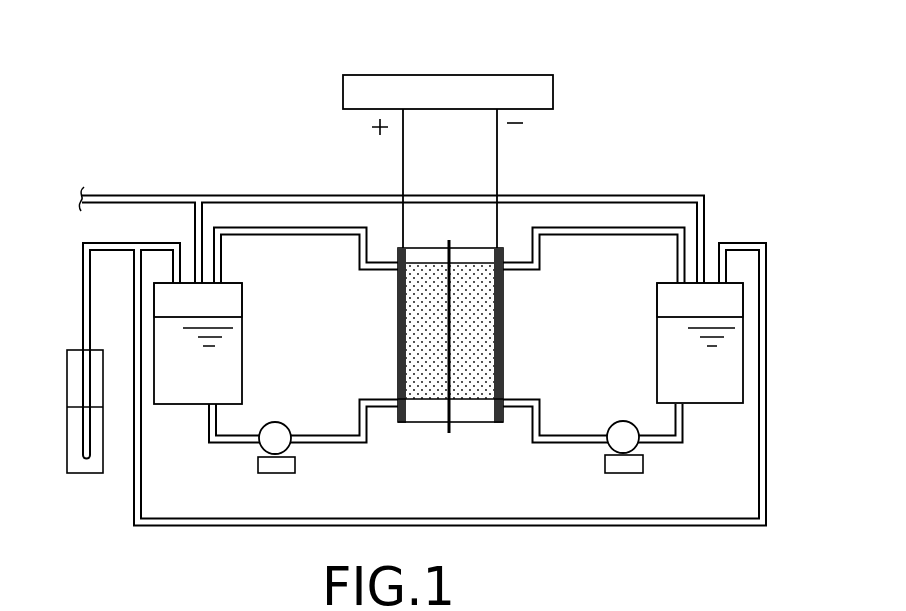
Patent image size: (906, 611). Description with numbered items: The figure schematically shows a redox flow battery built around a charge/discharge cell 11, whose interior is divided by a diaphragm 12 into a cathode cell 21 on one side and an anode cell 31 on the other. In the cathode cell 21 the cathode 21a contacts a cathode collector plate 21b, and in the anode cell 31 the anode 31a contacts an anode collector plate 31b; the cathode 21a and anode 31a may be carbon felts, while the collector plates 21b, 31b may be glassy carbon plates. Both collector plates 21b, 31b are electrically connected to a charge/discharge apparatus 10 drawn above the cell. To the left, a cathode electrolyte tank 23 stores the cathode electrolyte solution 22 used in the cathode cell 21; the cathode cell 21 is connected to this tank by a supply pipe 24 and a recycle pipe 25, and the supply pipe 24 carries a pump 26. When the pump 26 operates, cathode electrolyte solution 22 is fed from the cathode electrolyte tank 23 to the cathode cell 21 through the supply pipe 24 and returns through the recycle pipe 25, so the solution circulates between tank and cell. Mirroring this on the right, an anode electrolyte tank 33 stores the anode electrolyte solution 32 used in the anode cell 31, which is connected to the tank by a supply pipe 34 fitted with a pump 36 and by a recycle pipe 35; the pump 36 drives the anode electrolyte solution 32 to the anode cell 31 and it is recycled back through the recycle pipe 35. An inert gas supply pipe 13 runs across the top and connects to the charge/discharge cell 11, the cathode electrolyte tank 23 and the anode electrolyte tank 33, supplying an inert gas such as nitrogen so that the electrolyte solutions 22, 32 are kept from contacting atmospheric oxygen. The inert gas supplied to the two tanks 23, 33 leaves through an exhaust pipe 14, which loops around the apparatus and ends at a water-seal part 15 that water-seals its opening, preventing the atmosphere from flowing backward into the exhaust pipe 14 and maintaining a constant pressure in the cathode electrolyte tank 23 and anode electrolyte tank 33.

The charge/discharge apparatus 10 is at (553, 91).
The charge/discharge cell 11 is at (449, 316).
The diaphragm 12 is at (449, 237).
The inert gas supply pipe 13 is at (130, 195).
The exhaust pipe 14 is at (83, 287).
The water-seal part 15 is at (67, 420).
The cathode cell 21 is at (435, 423).
The cathode 21a is at (412, 423).
The cathode collector plate 21b is at (398, 318).
The cathode electrolyte solution 22 is at (242, 345).
The cathode electrolyte tank 23 is at (242, 297).
The supply pipe 24 is at (318, 446).
The recycle pipe 25 is at (290, 227).
The pump 26 is at (273, 422).
The anode cell 31 is at (483, 423).
The anode 31a is at (488, 423).
The anode collector plate 31b is at (503, 318).
The anode electrolyte solution 32 is at (657, 349).
The anode electrolyte tank 33 is at (657, 297).
The supply pipe 34 is at (580, 446).
The recycle pipe 35 is at (590, 227).
The pump 36 is at (623, 421).